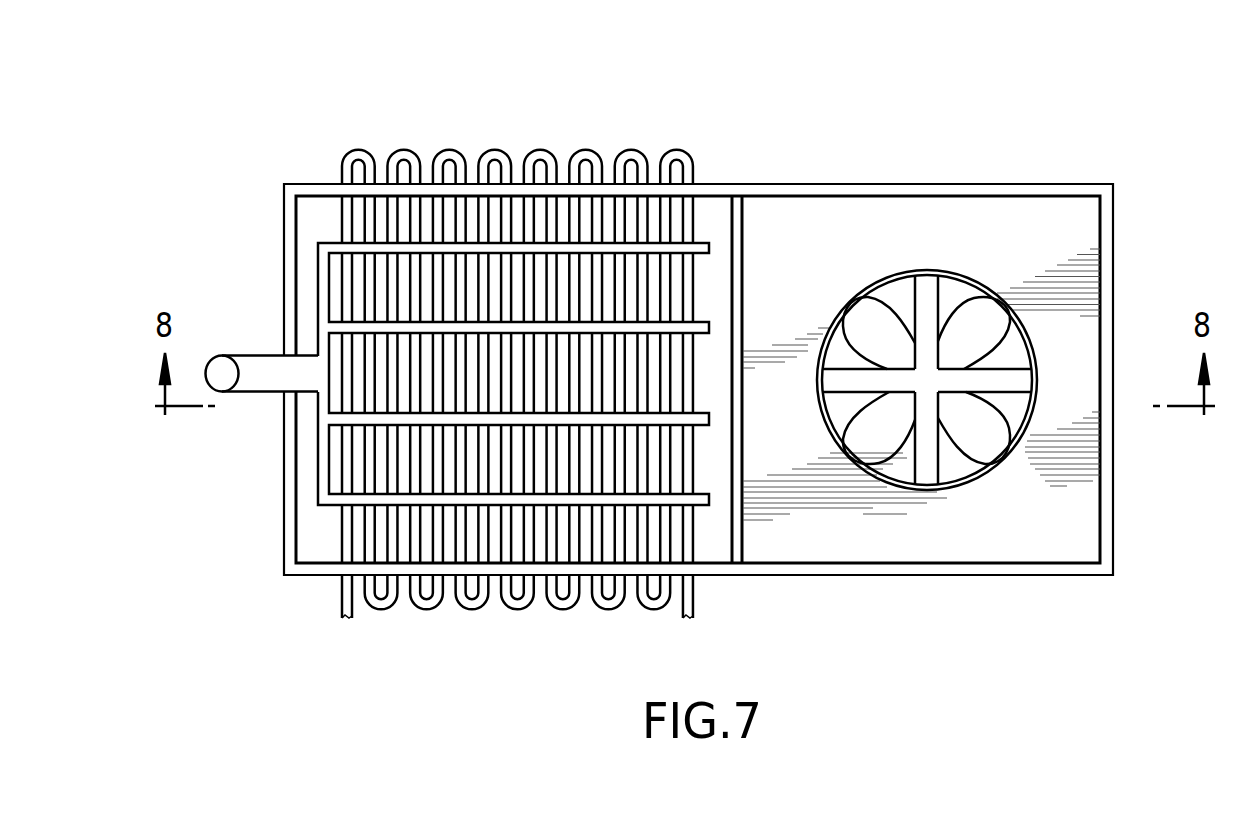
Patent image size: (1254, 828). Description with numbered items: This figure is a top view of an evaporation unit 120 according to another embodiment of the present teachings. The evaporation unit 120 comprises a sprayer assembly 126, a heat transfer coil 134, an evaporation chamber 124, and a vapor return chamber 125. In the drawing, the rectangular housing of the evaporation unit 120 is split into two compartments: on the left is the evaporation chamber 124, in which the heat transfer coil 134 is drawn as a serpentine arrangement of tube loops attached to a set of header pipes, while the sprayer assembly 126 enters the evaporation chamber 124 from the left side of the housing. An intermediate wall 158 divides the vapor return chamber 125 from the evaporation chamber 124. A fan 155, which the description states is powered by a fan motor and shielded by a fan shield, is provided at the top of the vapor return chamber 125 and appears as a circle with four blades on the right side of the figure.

The evaporation unit 120 is at (912, 147).
The evaporation chamber 124 is at (700, 564).
The vapor return chamber 125 is at (825, 564).
The sprayer assembly 126 is at (255, 356).
The heat transfer coil 134 is at (696, 172).
The fan 155 is at (957, 300).
The intermediate wall 158 is at (746, 290).